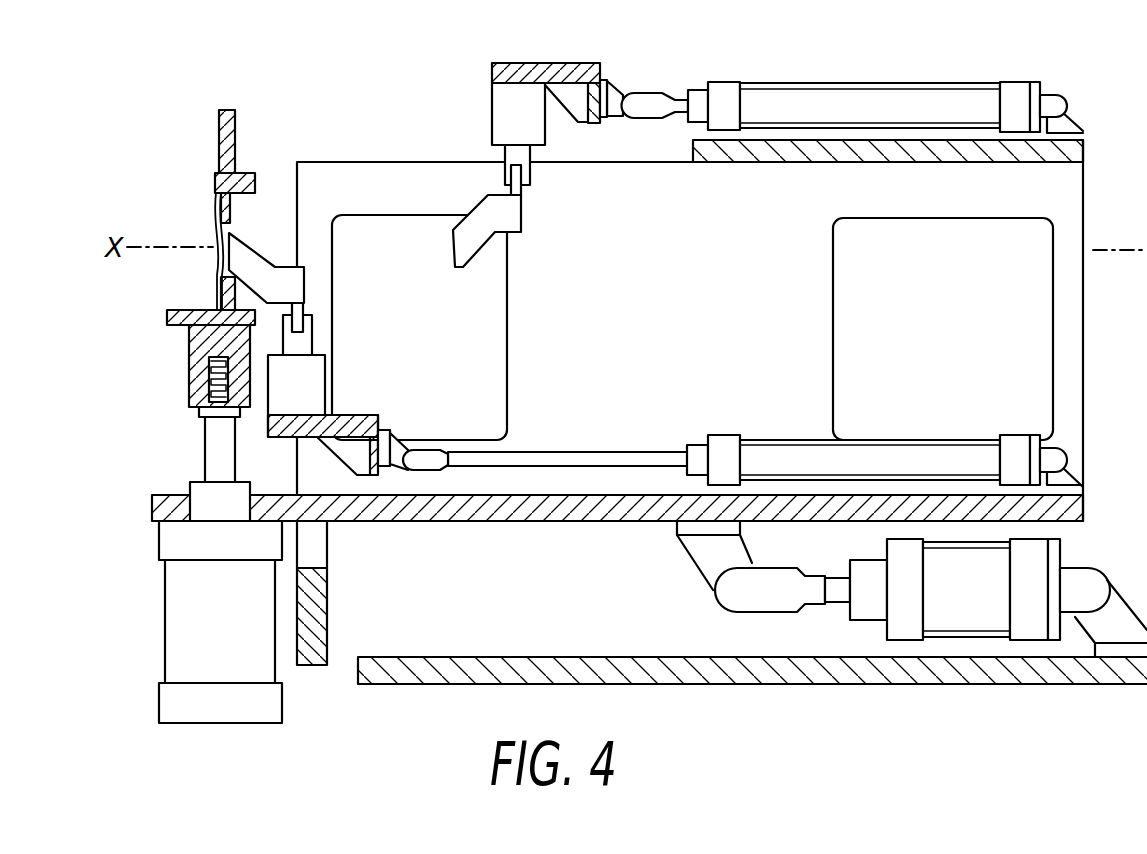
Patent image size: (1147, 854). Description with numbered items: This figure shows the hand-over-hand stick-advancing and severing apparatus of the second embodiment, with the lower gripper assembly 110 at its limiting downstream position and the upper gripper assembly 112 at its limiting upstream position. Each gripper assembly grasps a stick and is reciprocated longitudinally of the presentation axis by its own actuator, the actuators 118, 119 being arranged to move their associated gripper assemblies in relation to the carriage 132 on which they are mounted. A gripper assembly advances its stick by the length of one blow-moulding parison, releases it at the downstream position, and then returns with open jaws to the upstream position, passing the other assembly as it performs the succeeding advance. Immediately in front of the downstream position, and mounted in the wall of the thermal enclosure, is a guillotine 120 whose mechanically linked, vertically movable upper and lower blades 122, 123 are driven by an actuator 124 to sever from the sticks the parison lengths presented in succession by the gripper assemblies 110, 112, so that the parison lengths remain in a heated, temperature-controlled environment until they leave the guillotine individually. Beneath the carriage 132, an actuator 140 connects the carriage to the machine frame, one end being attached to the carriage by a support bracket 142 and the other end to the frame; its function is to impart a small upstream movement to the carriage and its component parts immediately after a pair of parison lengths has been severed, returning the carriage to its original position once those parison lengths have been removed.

The gripper assembly 110 is at (512, 217).
The gripper assembly 112 is at (290, 288).
The actuator 118 is at (885, 97).
The actuator 119 is at (775, 457).
The guillotine 120 is at (210, 195).
The upper blade 122 is at (218, 227).
The lower blade 123 is at (220, 282).
The actuator 124 is at (183, 613).
The carriage 132 is at (500, 530).
The actuator 140 is at (963, 620).
The support bracket 142 is at (715, 560).